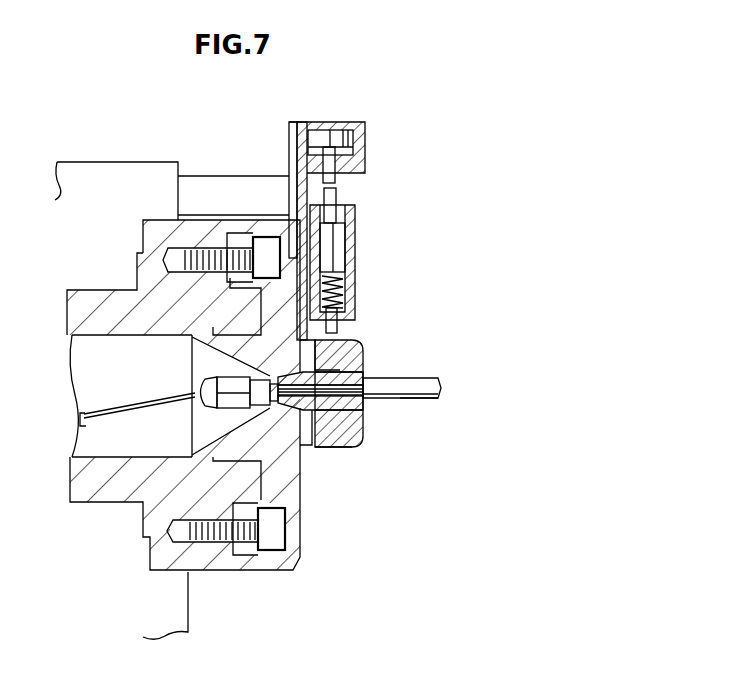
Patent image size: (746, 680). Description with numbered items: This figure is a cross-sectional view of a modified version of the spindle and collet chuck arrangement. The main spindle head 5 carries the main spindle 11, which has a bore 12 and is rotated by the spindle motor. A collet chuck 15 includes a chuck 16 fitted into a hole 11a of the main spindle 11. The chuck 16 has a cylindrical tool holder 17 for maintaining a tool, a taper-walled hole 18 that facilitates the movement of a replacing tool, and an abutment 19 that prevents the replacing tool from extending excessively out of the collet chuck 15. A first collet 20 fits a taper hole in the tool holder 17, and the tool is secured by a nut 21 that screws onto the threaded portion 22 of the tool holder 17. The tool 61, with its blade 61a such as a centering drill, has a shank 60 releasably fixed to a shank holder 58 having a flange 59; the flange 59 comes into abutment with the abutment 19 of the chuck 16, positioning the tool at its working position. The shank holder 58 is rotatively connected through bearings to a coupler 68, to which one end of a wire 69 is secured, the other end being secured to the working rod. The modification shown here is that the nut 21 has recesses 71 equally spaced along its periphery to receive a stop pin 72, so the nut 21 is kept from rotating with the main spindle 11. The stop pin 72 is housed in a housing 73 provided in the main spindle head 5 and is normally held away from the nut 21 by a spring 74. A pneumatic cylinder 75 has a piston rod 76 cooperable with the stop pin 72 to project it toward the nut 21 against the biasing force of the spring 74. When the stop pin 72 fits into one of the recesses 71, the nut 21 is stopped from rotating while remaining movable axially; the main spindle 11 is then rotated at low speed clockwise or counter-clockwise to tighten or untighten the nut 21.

The main spindle head 5 is at (125, 162).
The main spindle 11 is at (103, 298).
The hole 11a is at (283, 572).
The bore 12 is at (83, 368).
The collet chuck 15 is at (347, 498).
The chuck 16 is at (290, 490).
The cylindrical tool holder 17 is at (312, 418).
The taper-walled hole 18 is at (233, 418).
The abutment 19 is at (190, 353).
The first collet 20 is at (365, 410).
The nut 21 is at (368, 350).
The threaded portion 22 is at (347, 445).
The shank holder 58 is at (255, 405).
The flange 59 is at (280, 408).
The shank 60 is at (368, 402).
The tool 61 is at (418, 375).
The blade 61a is at (425, 402).
The coupler 68 is at (200, 383).
The wire 69 is at (100, 420).
The recesses 71 is at (340, 338).
The stop pin 72 is at (333, 252).
The housing 73 is at (357, 218).
The spring 74 is at (355, 292).
The pneumatic cylinder 75 is at (363, 127).
The piston rod 76 is at (363, 155).